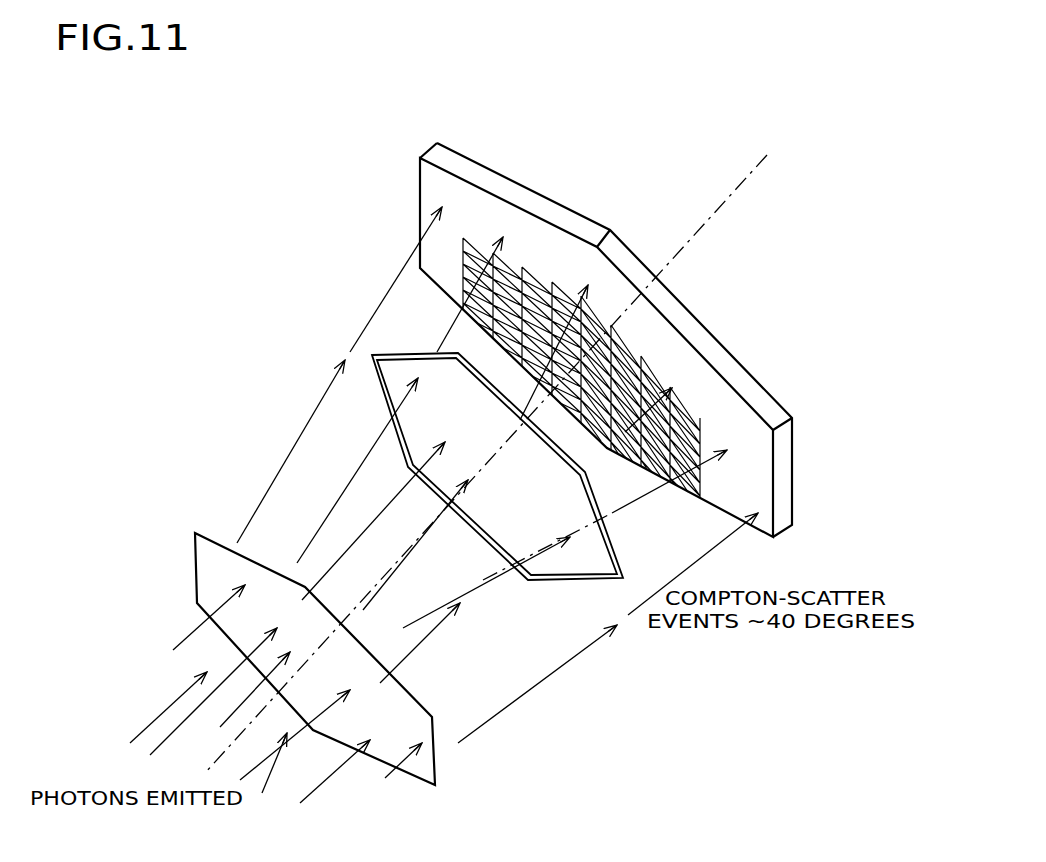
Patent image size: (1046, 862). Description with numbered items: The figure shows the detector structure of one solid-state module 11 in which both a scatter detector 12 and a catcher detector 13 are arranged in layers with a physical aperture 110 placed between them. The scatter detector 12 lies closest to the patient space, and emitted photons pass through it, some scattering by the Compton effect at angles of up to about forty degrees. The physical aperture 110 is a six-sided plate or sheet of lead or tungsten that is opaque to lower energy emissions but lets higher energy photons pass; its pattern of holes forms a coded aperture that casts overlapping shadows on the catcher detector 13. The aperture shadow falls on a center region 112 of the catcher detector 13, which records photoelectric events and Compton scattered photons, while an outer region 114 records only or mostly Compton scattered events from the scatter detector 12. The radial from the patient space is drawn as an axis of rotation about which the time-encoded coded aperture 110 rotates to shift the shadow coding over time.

The module 11 is at (341, 276).
The scatter detector 12 is at (190, 546).
The catcher detector 13 is at (417, 150).
The physical aperture 110 is at (372, 356).
The center region 112 is at (547, 273).
The outer region 114 is at (525, 348).